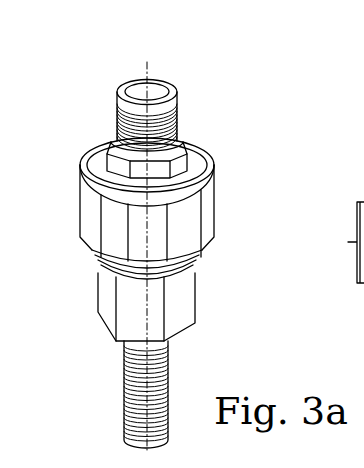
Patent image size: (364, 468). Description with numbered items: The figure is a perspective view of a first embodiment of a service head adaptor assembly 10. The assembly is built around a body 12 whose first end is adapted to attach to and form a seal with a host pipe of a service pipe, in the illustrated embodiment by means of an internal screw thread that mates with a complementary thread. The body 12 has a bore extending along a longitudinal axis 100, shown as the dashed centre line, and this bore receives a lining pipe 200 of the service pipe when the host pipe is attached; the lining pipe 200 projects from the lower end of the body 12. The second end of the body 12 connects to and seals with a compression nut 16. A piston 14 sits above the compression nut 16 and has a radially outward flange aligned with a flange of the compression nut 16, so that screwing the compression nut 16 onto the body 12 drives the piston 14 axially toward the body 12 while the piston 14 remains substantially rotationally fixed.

The service head adaptor assembly 10 is at (215, 93).
The longitudinal axis 100 is at (145, 63).
The piston 14 is at (187, 152).
The compression nut 16 is at (215, 203).
The body 12 is at (182, 305).
The lining pipe 200 is at (124, 378).